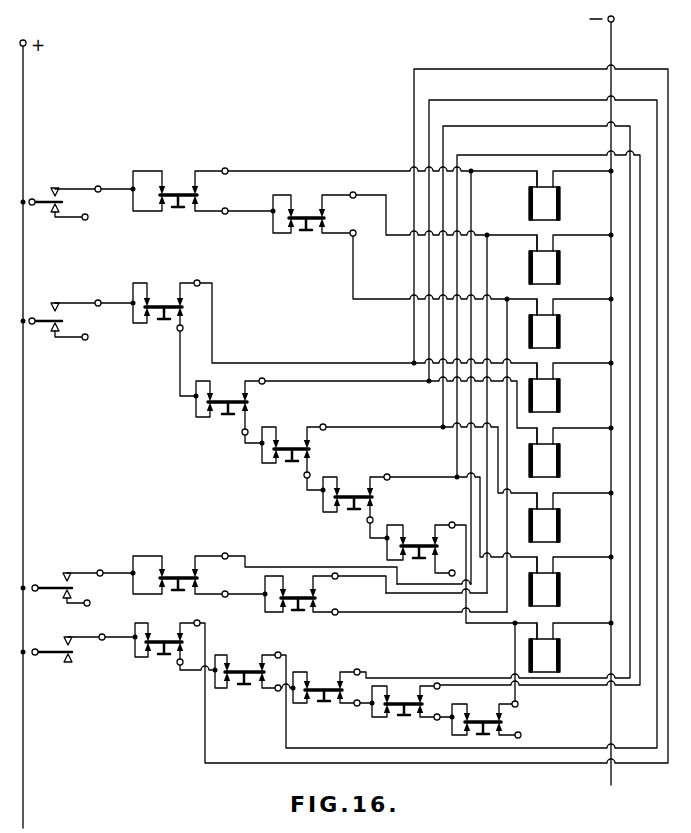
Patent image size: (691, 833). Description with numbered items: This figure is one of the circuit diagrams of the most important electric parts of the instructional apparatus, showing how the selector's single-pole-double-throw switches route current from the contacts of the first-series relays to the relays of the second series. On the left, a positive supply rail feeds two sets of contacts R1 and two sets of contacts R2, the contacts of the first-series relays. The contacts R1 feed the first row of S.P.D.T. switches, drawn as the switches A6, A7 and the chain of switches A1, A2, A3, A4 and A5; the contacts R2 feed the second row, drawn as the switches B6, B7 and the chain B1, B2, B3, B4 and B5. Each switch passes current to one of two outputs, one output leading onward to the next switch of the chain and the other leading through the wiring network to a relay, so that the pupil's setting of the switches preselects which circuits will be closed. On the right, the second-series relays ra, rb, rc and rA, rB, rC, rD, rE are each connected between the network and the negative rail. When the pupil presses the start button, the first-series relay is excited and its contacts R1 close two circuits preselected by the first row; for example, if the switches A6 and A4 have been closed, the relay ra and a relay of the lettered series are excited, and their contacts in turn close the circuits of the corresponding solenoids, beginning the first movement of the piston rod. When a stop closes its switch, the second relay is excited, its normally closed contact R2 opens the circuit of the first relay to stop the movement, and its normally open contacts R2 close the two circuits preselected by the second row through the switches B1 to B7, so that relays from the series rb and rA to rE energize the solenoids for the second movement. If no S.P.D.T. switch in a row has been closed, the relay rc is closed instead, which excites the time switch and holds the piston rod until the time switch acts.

The S.P.D.T. switch A1 is at (334, 338).
The S.P.D.T. switch A2 is at (366, 410).
The S.P.D.T. switch A3 is at (399, 466).
The S.P.D.T. switch A4 is at (429, 523).
The S.P.D.T. switch A5 is at (461, 580).
The S.P.D.T. switch A6 is at (334, 190).
The S.P.D.T. switch A7 is at (404, 253).
The S.P.D.T. switch B1 is at (174, 645).
The S.P.D.T. switch B2 is at (253, 671).
The S.P.D.T. switch B3 is at (332, 687).
The S.P.D.T. switch B4 is at (411, 701).
The S.P.D.T. switch B5 is at (486, 719).
The S.P.D.T. switch B6 is at (264, 574).
The S.P.D.T. switch B7 is at (325, 594).
The contacts of relay r1 R1 is at (77, 257).
The contacts of relay r2 R2 is at (78, 611).
The relay ra is at (571, 195).
The relay rb is at (571, 259).
The relay rc is at (571, 323).
The relay rA is at (571, 387).
The relay rB is at (571, 452).
The relay rC is at (571, 517).
The relay rD is at (571, 581).
The relay rE is at (571, 647).